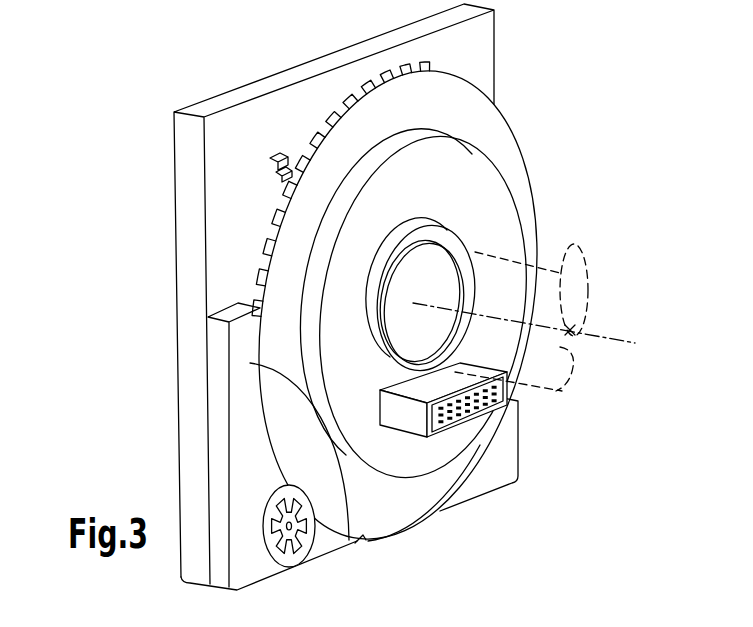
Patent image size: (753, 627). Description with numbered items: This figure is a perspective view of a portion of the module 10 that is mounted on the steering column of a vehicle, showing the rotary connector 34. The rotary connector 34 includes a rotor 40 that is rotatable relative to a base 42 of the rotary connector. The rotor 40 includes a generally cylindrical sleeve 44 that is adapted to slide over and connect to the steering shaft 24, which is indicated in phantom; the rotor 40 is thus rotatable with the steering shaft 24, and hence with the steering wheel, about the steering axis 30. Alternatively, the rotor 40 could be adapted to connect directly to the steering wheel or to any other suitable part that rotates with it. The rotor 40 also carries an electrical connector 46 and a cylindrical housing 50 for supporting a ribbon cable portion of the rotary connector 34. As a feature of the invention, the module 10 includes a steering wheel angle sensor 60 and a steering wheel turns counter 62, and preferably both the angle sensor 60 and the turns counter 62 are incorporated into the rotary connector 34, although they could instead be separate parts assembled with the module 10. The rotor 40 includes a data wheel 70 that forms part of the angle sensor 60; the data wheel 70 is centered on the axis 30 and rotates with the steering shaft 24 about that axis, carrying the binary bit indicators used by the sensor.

The module 10 is at (145, 47).
The rotary connector 34 is at (120, 72).
The base 42 is at (252, 488).
The data wheel 70 is at (337, 143).
The steering wheel angle sensor 60 is at (245, 152).
The cylindrical housing 50 is at (387, 180).
The rotor 40 is at (467, 162).
The cylindrical sleeve 44 is at (433, 255).
The electrical connector 46 is at (467, 412).
The steering wheel turns counter 62 is at (324, 569).
The steering shaft 24 is at (568, 252).
The steering axis 30 is at (597, 333).